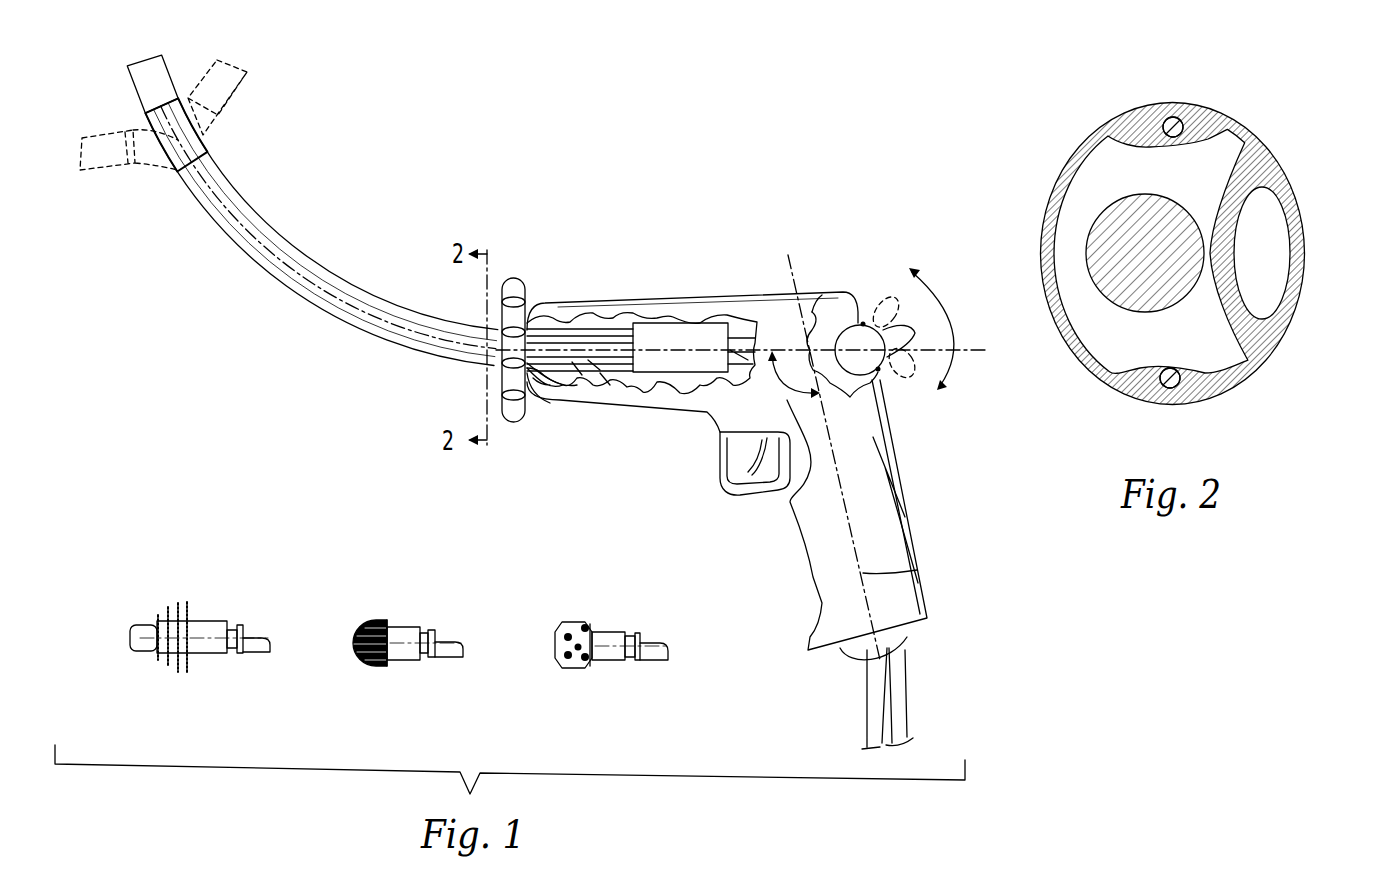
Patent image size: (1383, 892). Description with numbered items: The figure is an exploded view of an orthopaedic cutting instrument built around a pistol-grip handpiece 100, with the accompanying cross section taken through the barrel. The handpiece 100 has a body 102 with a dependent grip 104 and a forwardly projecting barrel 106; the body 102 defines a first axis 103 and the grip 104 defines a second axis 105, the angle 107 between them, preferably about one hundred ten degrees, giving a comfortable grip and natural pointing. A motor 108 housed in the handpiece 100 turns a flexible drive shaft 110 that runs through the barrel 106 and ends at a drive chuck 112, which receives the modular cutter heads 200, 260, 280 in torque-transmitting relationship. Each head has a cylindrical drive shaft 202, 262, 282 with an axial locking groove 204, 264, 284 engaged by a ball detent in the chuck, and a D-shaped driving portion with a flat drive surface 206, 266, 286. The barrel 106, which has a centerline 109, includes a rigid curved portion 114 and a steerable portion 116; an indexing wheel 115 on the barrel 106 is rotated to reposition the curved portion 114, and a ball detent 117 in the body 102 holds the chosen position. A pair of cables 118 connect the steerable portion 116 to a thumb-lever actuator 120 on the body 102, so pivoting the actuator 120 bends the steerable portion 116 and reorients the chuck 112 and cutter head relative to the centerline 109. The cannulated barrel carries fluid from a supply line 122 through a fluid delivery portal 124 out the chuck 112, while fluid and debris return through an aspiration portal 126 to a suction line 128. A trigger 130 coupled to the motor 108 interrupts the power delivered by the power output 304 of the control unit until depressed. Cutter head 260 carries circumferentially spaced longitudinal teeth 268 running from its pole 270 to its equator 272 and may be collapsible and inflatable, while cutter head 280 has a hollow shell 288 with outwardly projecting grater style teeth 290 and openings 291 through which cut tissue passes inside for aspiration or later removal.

In FIG. 1, the handpiece 100 is at (748, 234).
In FIG. 1, the body 102 is at (772, 315).
In FIG. 1, the first axis 103 is at (968, 350).
In FIG. 1, the grip 104 is at (873, 542).
In FIG. 1, the second axis 105 is at (917, 570).
In FIG. 1, the barrel 106 is at (343, 270).
In FIG. 1, the angle 107 is at (792, 505).
In FIG. 1, the motor 108 is at (672, 323).
In FIG. 1, the centerline 109 is at (293, 273).
In FIG. 1, the flexible drive shaft 110 is at (603, 343).
In FIG. 2, the flexible drive shaft 110 is at (1114, 200).
In FIG. 1, the drive chuck 112 is at (130, 72).
In FIG. 1, the curved portion 114 is at (260, 213).
In FIG. 1, the indexing wheel 115 is at (517, 275).
In FIG. 1, the steerable portion 116 is at (205, 140).
In FIG. 2, the steerable portion 116 is at (1302, 220).
In FIG. 1, the ball detent 117 is at (528, 312).
In FIG. 1, the cables 118 is at (826, 372).
In FIG. 2, the cables 118 is at (1175, 118).
In FIG. 1, the actuator 120 is at (915, 332).
In FIG. 1, the supply line 122 is at (557, 380).
In FIG. 2, the fluid delivery portal 124 is at (1264, 272).
In FIG. 2, the aspiration portal 126 is at (1069, 232).
In FIG. 1, the suction line 128 is at (580, 397).
In FIG. 1, the trigger 130 is at (740, 467).
In FIG. 1, the cutter head 200 is at (252, 534).
In FIG. 1, the drive shaft 202 is at (207, 620).
In FIG. 1, the axial locking groove 204 is at (230, 657).
In FIG. 1, the flat drive surface 206 is at (257, 637).
In FIG. 1, the cutter head 260 is at (448, 561).
In FIG. 1, the drive shaft 262 is at (403, 627).
In FIG. 1, the axial locking groove 264 is at (428, 660).
In FIG. 1, the flat drive surface 266 is at (447, 637).
In FIG. 1, the teeth 268 is at (377, 620).
In FIG. 1, the pole 270 is at (352, 643).
In FIG. 1, the equator 272 is at (390, 660).
In FIG. 1, the cutter head 280 is at (610, 578).
In FIG. 1, the drive shaft 282 is at (613, 630).
In FIG. 1, the axial locking groove 284 is at (631, 660).
In FIG. 1, the flat drive surface 286 is at (657, 640).
In FIG. 1, the hollow shell 288 is at (562, 630).
In FIG. 1, the grater style teeth 290 is at (590, 627).
In FIG. 1, the openings 291 is at (567, 670).
In FIG. 1, the power output 304 is at (900, 673).